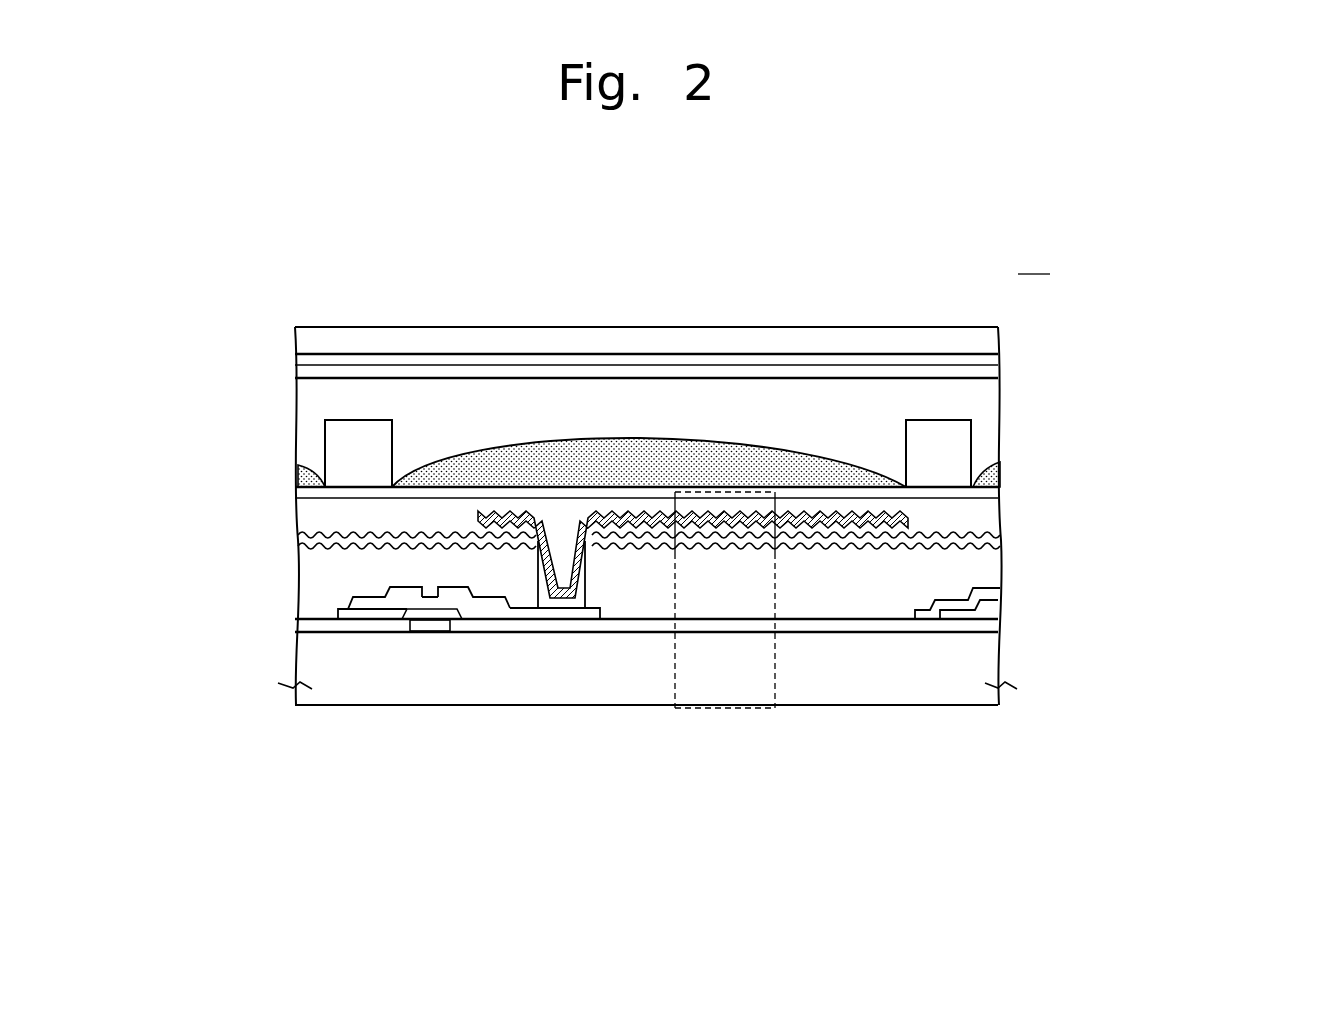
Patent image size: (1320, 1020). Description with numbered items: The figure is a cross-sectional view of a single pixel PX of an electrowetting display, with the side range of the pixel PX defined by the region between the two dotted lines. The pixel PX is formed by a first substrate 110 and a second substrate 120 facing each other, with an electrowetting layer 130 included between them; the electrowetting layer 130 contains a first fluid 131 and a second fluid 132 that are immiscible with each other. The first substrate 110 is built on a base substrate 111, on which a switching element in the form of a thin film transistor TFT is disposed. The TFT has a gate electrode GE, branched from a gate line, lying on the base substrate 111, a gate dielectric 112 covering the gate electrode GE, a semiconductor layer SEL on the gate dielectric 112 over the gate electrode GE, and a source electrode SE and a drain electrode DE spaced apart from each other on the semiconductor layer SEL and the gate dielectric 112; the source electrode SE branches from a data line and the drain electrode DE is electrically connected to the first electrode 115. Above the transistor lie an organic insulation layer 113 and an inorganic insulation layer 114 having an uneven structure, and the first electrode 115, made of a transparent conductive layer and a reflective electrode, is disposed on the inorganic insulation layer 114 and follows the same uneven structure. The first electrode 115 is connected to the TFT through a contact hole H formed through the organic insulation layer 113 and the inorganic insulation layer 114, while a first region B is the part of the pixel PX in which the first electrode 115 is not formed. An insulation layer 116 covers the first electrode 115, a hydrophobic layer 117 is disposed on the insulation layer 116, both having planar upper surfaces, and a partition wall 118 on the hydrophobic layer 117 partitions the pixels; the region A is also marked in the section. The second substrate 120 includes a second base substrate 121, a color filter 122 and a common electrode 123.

The first substrate 110 is at (698, 599).
The base substrate 111 is at (988, 663).
The gate dielectric 112 is at (990, 624).
The organic insulation layer 113 is at (983, 597).
The inorganic insulation layer 114 is at (987, 573).
The first electrode 115 is at (736, 550).
The insulation layer 116 is at (985, 505).
The hydrophobic layer 117 is at (985, 494).
The partition wall 118 is at (960, 428).
The second substrate 120 is at (721, 369).
The second base substrate 121 is at (988, 339).
The color filter 122 is at (990, 361).
The common electrode 123 is at (993, 373).
The electrowetting layer 130 is at (579, 436).
The first fluid 131 is at (432, 478).
The second fluid 132 is at (325, 398).
The thin film transistor TFT is at (445, 700).
The source electrode SE is at (368, 603).
The gate electrode GE is at (429, 626).
The semiconductor layer SEL is at (482, 614).
The drain electrode DE is at (492, 677).
The contact hole H is at (560, 535).
The first region B is at (478, 507).
The region A is at (726, 708).
The pixel PX is at (938, 705).